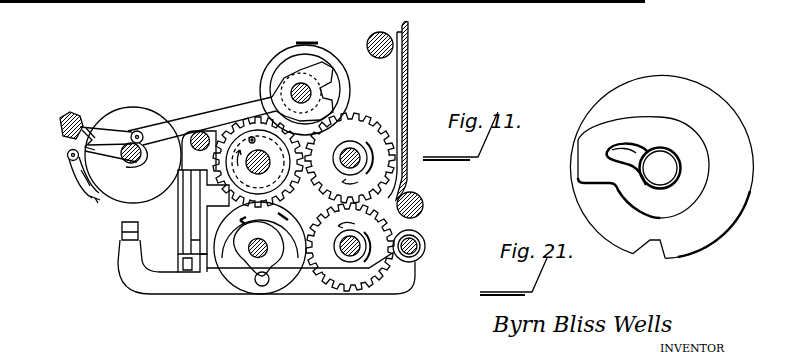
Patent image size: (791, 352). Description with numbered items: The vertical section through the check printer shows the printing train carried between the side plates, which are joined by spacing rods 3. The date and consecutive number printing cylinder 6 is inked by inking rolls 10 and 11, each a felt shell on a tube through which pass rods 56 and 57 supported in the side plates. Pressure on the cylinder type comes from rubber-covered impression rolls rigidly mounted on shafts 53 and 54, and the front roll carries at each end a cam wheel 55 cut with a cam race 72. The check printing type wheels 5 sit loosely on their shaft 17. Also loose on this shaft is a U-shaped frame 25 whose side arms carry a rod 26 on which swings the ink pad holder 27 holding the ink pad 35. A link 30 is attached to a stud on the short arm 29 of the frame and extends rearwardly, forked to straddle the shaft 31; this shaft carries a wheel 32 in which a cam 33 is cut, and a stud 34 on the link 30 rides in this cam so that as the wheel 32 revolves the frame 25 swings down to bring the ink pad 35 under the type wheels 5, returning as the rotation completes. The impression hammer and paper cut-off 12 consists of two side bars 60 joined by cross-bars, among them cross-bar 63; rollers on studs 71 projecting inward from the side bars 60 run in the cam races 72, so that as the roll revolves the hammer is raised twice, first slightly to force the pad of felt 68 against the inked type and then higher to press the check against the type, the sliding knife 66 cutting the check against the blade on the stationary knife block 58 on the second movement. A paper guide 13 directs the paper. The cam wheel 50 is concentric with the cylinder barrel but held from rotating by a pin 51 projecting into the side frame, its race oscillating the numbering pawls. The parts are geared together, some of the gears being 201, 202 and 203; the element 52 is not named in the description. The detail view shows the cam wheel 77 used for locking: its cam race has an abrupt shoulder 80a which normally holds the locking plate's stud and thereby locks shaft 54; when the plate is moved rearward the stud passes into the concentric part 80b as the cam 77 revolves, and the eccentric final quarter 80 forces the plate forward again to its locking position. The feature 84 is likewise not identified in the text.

In FIG. 11, the spacing rods 3 is at (61, 127).
In FIG. 11, the check printing type carrying wheels 5 is at (131, 108).
In FIG. 11, the date and consecutive number printing cylinder 6 is at (242, 135).
In FIG. 11, the inking roll 10 is at (189, 130).
In FIG. 11, the inking roll 11 is at (421, 243).
In FIG. 11, the check impression hammer and paper cut-off 12 is at (126, 271).
In FIG. 11, the paper guide 13 is at (407, 71).
In FIG. 11, the shaft 17 is at (130, 165).
In FIG. 11, the U-shaped frame 25 is at (93, 141).
In FIG. 11, the rod 26 is at (72, 160).
In FIG. 11, the ink pad holder 27 is at (80, 183).
In FIG. 11, the short arm 29 is at (130, 126).
In FIG. 11, the link 30 is at (193, 122).
In FIG. 11, the shaft 31 is at (312, 97).
In FIG. 11, the cam wheel 32 is at (256, 80).
In FIG. 11, the cam 33 is at (318, 60).
In FIG. 11, the stud 34 is at (280, 97).
In FIG. 11, the ink pad 35 is at (91, 199).
In FIG. 11, the cam wheel 50 is at (275, 180).
In FIG. 11, the pin 51 is at (258, 139).
In FIG. 11, the shaft 52 is at (367, 250).
In FIG. 11, the shaft 53 is at (256, 258).
In FIG. 11, the shaft 54 is at (360, 158).
In FIG. 21, the shaft 54 is at (670, 168).
In FIG. 11, the cam wheel 55 is at (247, 260).
In FIG. 11, the rod 56 is at (182, 125).
In FIG. 11, the rod 57 is at (423, 250).
In FIG. 11, the stationary knife block 58 is at (215, 203).
In FIG. 11, the side bars 60 is at (182, 296).
In FIG. 11, the cross-bar 63 is at (185, 262).
In FIG. 11, the sliding knife 66 is at (197, 263).
In FIG. 11, the pad of felt 68 is at (124, 234).
In FIG. 11, the studs 71 is at (264, 286).
In FIG. 11, the cam races 72 is at (290, 255).
In FIG. 21, the cam wheel 77 is at (661, 170).
In FIG. 21, the final quarter of cam race 80 is at (663, 156).
In FIG. 21, the abrupt shoulder 80a is at (610, 185).
In FIG. 21, the concentric part of cam race 80b is at (693, 188).
In FIG. 21, the notch 84 is at (656, 248).
In FIG. 11, the gear 201 is at (368, 130).
In FIG. 11, the gear 202 is at (220, 170).
In FIG. 11, the gear 203 is at (333, 258).